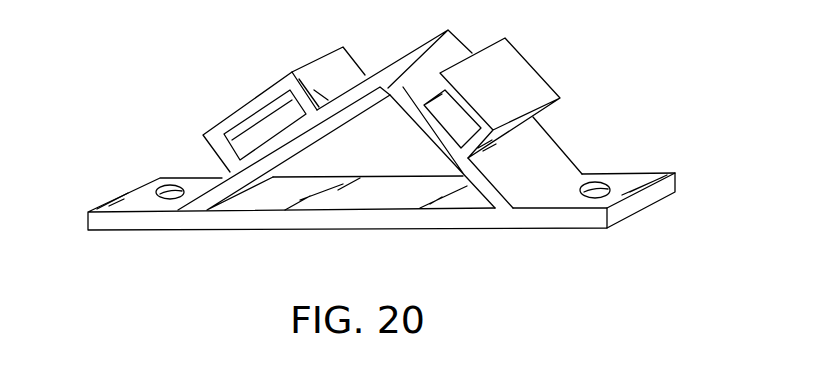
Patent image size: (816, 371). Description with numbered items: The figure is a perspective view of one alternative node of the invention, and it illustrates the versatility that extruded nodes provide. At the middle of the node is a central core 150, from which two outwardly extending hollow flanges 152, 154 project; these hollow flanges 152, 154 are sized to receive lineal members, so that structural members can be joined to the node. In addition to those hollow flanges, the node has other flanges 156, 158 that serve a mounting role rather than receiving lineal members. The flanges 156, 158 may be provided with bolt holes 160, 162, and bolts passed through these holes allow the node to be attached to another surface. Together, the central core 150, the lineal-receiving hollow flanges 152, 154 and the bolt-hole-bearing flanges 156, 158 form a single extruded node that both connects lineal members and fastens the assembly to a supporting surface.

The central core 150 is at (392, 112).
The hollow flange 152 is at (533, 62).
The hollow flange 154 is at (298, 70).
The flange 156 is at (642, 211).
The flange 158 is at (103, 232).
The bolt hole 160 is at (608, 182).
The bolt hole 162 is at (177, 186).